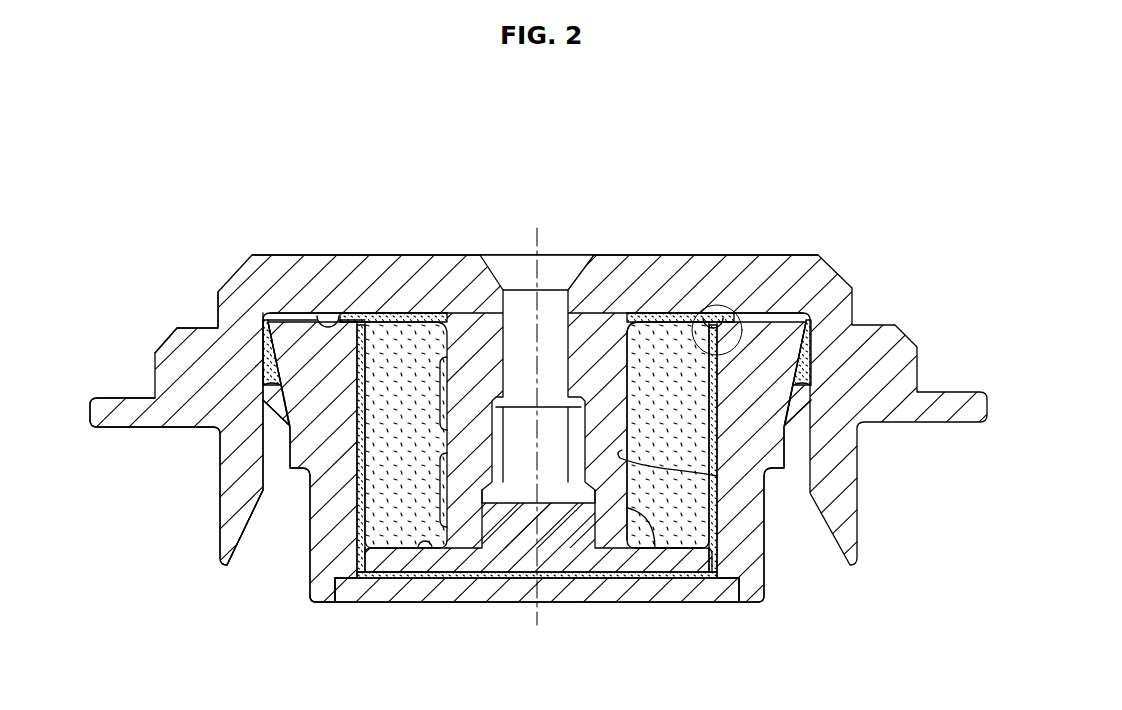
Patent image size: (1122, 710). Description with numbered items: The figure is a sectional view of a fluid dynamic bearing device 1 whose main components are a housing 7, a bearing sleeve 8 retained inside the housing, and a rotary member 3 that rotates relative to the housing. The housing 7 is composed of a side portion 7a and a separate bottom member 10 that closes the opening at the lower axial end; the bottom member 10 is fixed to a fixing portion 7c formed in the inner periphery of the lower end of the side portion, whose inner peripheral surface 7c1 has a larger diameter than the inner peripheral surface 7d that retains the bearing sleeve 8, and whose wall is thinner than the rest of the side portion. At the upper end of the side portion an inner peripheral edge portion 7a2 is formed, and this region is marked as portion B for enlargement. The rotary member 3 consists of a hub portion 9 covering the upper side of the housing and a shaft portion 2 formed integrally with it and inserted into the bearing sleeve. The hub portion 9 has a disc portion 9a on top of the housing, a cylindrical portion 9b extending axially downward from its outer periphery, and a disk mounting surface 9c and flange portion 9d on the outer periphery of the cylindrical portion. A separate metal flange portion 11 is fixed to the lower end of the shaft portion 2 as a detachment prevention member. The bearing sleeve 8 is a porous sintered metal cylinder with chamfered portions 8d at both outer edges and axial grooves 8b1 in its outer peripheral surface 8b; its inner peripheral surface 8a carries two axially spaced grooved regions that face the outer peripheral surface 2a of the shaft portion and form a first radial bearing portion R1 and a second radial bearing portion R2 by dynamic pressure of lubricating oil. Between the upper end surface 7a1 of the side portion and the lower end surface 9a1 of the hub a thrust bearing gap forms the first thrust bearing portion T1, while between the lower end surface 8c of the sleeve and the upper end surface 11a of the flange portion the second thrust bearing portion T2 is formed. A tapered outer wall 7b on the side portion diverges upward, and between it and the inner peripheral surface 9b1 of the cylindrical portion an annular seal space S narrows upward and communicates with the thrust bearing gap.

The fluid dynamic bearing device 1 is at (654, 178).
The shaft portion 2 is at (645, 390).
The outer peripheral surface of the shaft portion 2a is at (660, 550).
The rotary member 3 is at (338, 243).
The housing 7 is at (582, 616).
The side portion 7a is at (320, 533).
The upper end surface of the side portion 7a1 is at (288, 313).
The inner peripheral edge portion 7a2 is at (718, 300).
The tapered outer wall 7b is at (233, 470).
The fixing portion 7c is at (757, 585).
The inner peripheral surface of the fixing portion 7c1 is at (741, 600).
The inner peripheral surface of the side portion 7d is at (717, 397).
The bearing sleeve 8 is at (700, 500).
The inner peripheral surface of the bearing sleeve 8a is at (717, 476).
The outer peripheral surface of the bearing sleeve 8b is at (247, 533).
The axial grooves 8b1 is at (312, 594).
The lower end surface of the bearing sleeve 8c is at (388, 575).
The chamfered portions 8d is at (722, 550).
The hub portion 9 is at (762, 245).
The disc portion 9a is at (413, 283).
The lower end surface of the hub portion 9a1 is at (342, 320).
The cylindrical portion 9b is at (235, 478).
The inner peripheral surface of the cylindrical portion 9b1 is at (218, 433).
The disk mounting surface 9c is at (197, 327).
The flange portion 9d is at (113, 412).
The bottom member 10 is at (513, 595).
The flange portion 11 is at (633, 563).
The upper end surface of the flange portion 11a is at (427, 560).
The portion B is at (740, 318).
The first radial bearing portion R1 is at (422, 402).
The second radial bearing portion R2 is at (420, 499).
The seal space S is at (252, 359).
The first thrust bearing portion T1 is at (304, 303).
The second thrust bearing portion T2 is at (401, 576).